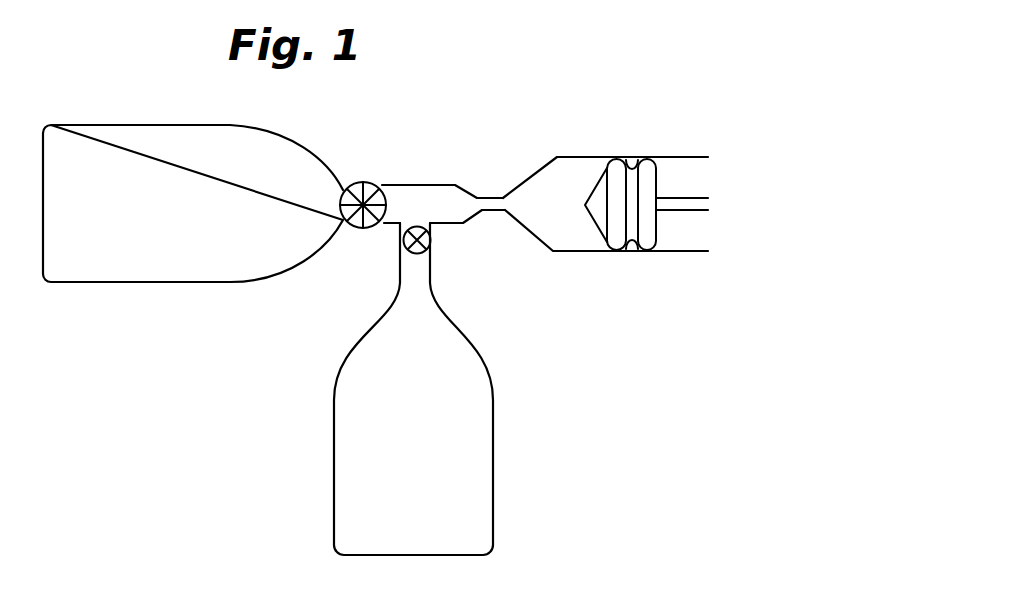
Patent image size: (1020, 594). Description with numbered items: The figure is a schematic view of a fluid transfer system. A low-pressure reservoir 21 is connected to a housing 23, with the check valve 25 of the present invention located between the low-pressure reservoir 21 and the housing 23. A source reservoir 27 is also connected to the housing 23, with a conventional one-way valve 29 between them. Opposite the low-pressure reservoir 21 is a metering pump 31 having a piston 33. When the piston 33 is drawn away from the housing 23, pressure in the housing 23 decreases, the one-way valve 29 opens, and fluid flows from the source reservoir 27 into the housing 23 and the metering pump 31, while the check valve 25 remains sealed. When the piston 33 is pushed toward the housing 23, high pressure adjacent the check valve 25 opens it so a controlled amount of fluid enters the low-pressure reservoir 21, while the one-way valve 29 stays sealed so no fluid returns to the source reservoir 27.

The low-pressure reservoir 21 is at (168, 213).
The housing 23 is at (486, 182).
The check valve 25 is at (352, 226).
The source reservoir 27 is at (432, 443).
The conventional one-way valve 29 is at (432, 245).
The metering pump 31 is at (568, 156).
The piston 33 is at (632, 168).